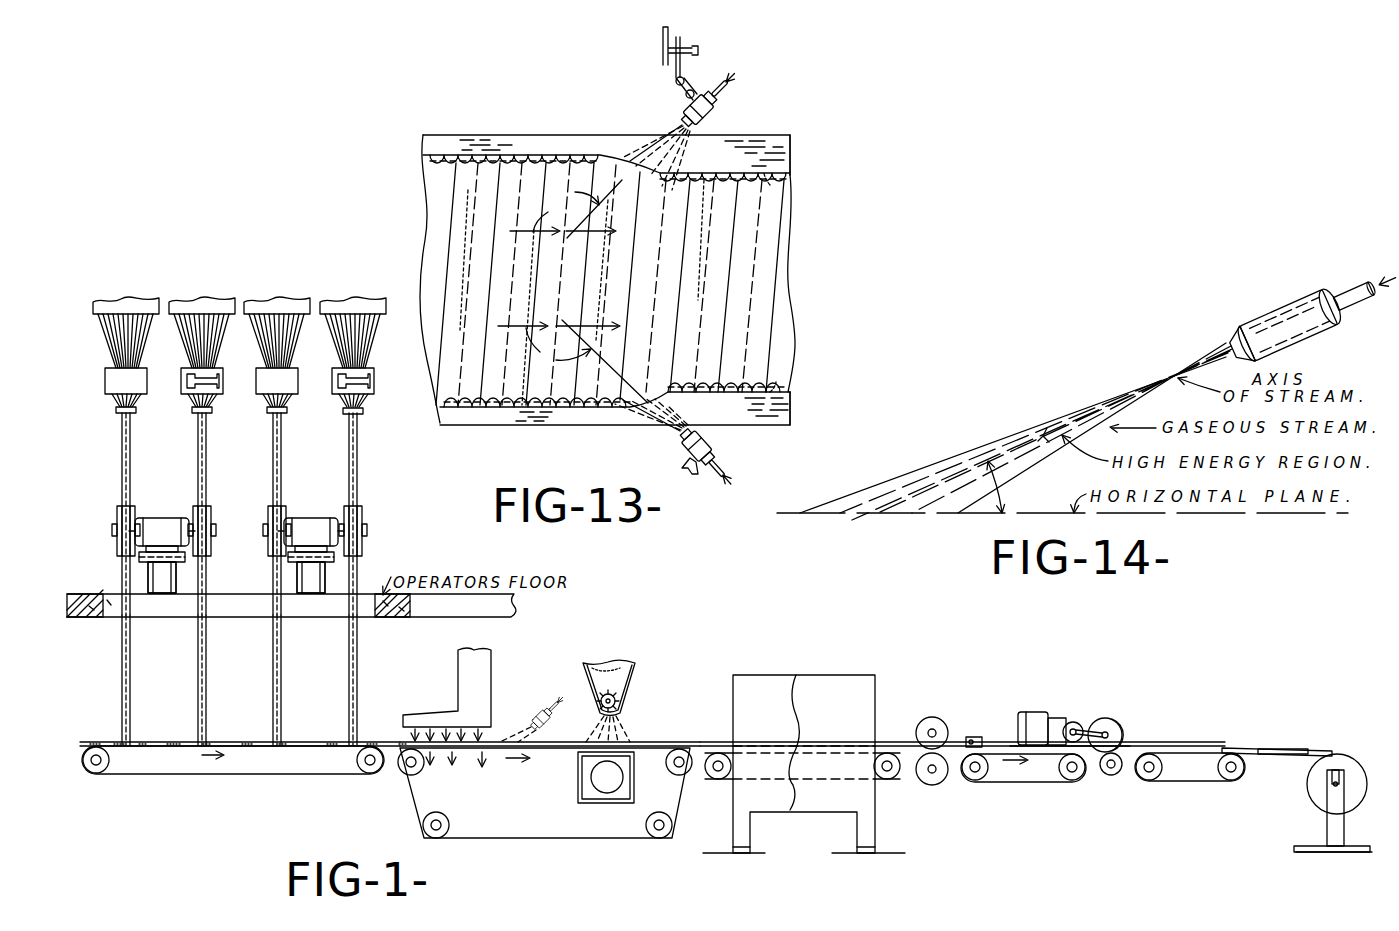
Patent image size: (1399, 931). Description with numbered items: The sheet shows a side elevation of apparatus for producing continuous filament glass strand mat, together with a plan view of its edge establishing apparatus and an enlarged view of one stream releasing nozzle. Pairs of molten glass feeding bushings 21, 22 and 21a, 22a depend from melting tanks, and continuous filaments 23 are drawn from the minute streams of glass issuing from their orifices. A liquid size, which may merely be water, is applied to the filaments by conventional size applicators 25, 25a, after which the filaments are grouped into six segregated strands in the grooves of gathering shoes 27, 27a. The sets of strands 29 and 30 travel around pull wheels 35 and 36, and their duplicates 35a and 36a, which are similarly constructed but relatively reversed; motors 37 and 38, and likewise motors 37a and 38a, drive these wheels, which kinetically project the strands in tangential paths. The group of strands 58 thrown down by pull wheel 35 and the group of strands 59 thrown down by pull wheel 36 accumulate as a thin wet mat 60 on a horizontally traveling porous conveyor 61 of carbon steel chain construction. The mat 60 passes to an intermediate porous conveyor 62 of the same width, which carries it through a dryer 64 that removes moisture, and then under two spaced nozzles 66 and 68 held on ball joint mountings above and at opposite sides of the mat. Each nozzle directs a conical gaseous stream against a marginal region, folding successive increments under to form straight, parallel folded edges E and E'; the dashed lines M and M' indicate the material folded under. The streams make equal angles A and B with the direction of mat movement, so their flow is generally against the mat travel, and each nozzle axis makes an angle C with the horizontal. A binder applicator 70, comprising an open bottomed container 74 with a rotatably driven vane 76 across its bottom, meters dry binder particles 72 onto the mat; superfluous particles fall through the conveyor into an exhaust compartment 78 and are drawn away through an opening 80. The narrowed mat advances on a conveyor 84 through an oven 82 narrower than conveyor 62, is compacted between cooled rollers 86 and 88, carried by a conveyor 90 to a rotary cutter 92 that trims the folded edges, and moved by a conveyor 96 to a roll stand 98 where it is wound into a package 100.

In FIG. 1, the molten glass feeding bushing 21 is at (392, 296).
In FIG. 1, the molten glass feeding bushing 21a is at (244, 296).
In FIG. 1, the molten glass feeding bushing 22 is at (312, 296).
In FIG. 1, the molten glass feeding bushing 22a is at (167, 296).
In FIG. 1, the continuous filaments 23 is at (108, 350).
In FIG. 1, the size applicator 25 is at (262, 394).
In FIG. 1, the size applicator 25a is at (108, 386).
In FIG. 1, the gathering shoe 27 is at (268, 414).
In FIG. 1, the gathering shoe 27a is at (194, 414).
In FIG. 1, the set of strands 29 is at (197, 459).
In FIG. 1, the set of strands 30 is at (120, 455).
In FIG. 1, the pull wheel 35 is at (363, 514).
In FIG. 1, the pull wheel 35a is at (207, 514).
In FIG. 1, the pull wheel 36 is at (267, 546).
In FIG. 1, the pull wheel 36a is at (116, 547).
In FIG. 1, the motor 37 is at (334, 522).
In FIG. 1, the motor 37a is at (188, 522).
In FIG. 1, the motor 38 is at (300, 520).
In FIG. 1, the motor 38a is at (140, 520).
In FIG. 1, the group of strands 58 is at (197, 660).
In FIG. 1, the group of strands 59 is at (121, 663).
In FIG. 1, the mat 60 is at (246, 740).
In FIG. 13, the mat 60 is at (419, 208).
In FIG. 1, the porous conveyor 61 is at (270, 762).
In FIG. 13, the porous conveyor 61 is at (505, 135).
In FIG. 1, the intermediate porous conveyor 62 is at (562, 750).
In FIG. 1, the dryer 64 is at (492, 674).
In FIG. 1, the nozzle 66 is at (540, 718).
In FIG. 13, the nozzle 66 is at (676, 453).
In FIG. 14, the nozzle 66 is at (1274, 306).
In FIG. 13, the nozzle 68 is at (674, 110).
In FIG. 1, the binder applicator 70 is at (646, 670).
In FIG. 1, the binder particles 72 is at (624, 724).
In FIG. 1, the container 74 is at (610, 676).
In FIG. 1, the vane 76 is at (622, 703).
In FIG. 1, the exhaust compartment 78 is at (602, 808).
In FIG. 1, the opening 80 is at (624, 784).
In FIG. 1, the oven 82 is at (794, 684).
In FIG. 1, the conveyor 84 is at (776, 738).
In FIG. 1, the roller 86 is at (938, 718).
In FIG. 1, the roller 88 is at (928, 787).
In FIG. 1, the conveyor 90 is at (1036, 786).
In FIG. 1, the rotary cutter 92 is at (1088, 708).
In FIG. 1, the conveyor 96 is at (1162, 786).
In FIG. 1, the roll stand 98 is at (1326, 826).
In FIG. 1, the package 100 is at (1306, 796).
In FIG. 13, the angle A is at (573, 361).
In FIG. 13, the angle B is at (566, 209).
In FIG. 14, the angle C is at (985, 518).
In FIG. 13, the folded edge E is at (814, 155).
In FIG. 13, the folded edge E' is at (772, 429).
In FIG. 13, the folded mat material M is at (794, 195).
In FIG. 13, the folded mat material M' is at (801, 370).